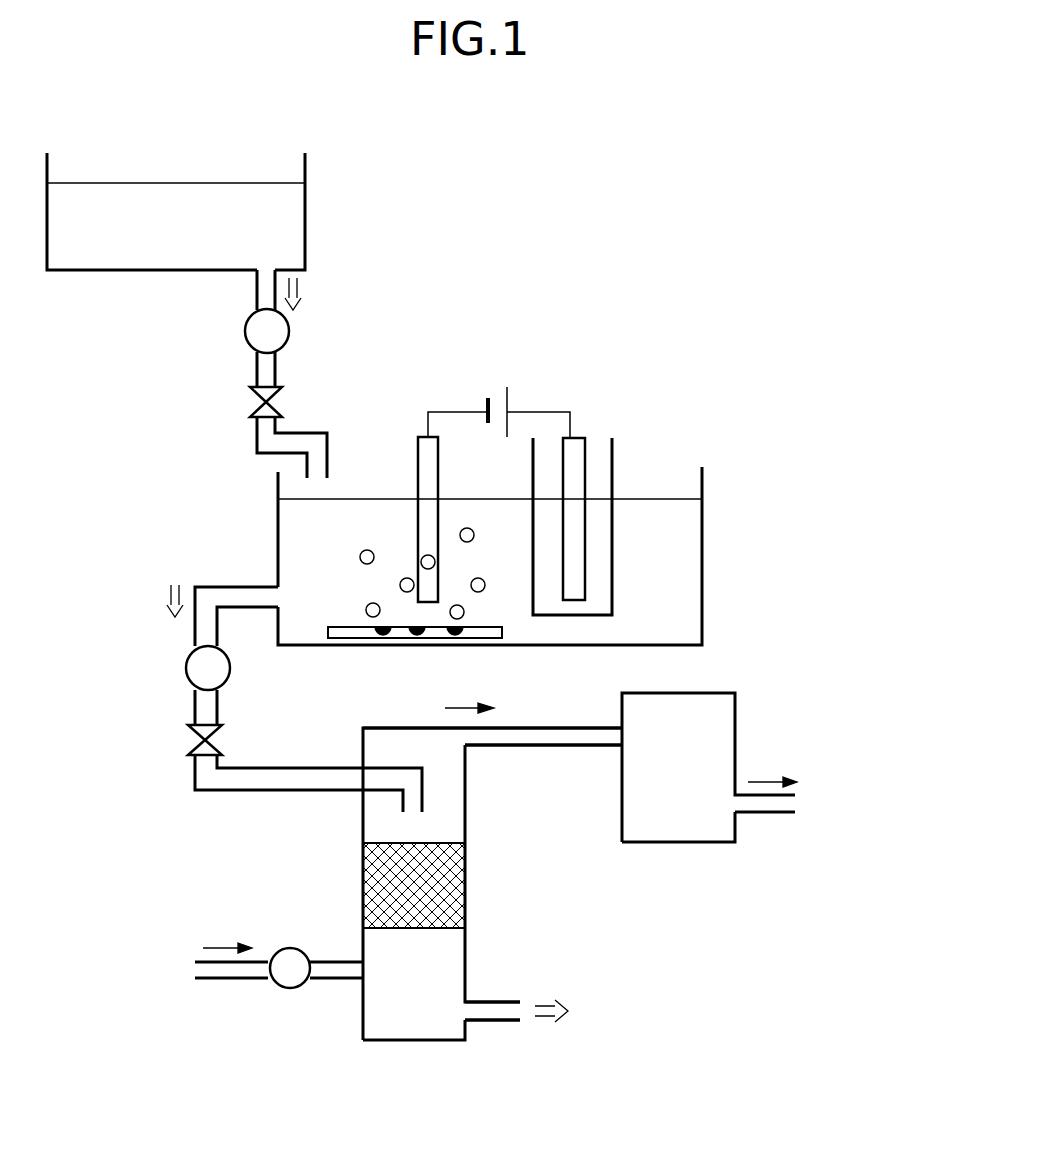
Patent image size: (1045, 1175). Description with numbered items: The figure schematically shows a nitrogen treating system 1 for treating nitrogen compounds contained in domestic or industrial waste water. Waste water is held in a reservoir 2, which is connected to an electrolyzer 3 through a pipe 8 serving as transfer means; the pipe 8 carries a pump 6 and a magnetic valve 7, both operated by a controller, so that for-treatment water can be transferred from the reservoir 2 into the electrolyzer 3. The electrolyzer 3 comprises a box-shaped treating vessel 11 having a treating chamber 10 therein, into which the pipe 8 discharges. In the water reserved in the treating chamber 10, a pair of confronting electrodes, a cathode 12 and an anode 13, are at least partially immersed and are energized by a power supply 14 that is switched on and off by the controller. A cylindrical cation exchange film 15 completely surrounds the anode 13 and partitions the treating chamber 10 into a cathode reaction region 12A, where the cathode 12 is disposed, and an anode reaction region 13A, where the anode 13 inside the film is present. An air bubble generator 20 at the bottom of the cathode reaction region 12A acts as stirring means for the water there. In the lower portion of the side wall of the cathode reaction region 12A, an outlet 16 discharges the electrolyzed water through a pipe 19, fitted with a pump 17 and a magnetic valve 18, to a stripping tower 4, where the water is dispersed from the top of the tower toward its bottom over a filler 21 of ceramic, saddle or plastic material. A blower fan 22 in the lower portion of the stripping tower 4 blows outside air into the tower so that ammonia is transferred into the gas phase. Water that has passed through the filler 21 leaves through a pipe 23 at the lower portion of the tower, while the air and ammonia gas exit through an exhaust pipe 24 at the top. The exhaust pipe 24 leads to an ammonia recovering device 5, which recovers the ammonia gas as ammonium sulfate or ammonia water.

The nitrogen treating system 1 is at (665, 318).
The reservoir 2 is at (306, 200).
The electrolyzer 3 is at (654, 468).
The stripping tower 4 is at (390, 1042).
The ammonia recovering device 5 is at (680, 843).
The pump 6 is at (244, 318).
The magnetic valve 7 is at (253, 396).
The pipe 8 is at (262, 443).
The treating chamber 10 is at (674, 576).
The treating vessel 11 is at (704, 558).
The cathode 12 is at (424, 445).
The cathode reaction region 12A is at (339, 537).
The anode 13 is at (573, 447).
The anode reaction region 13A is at (603, 530).
The power supply 14 is at (510, 400).
The cation exchange film 15 is at (612, 453).
The outlet 16 is at (275, 610).
The pump 17 is at (185, 665).
The magnetic valve 18 is at (190, 745).
The pipe 19 is at (245, 792).
The air bubble generator 20 is at (345, 632).
The filler 21 is at (453, 883).
The blower fan 22 is at (288, 982).
The pipe 23 is at (505, 1013).
The exhaust pipe 24 is at (580, 733).